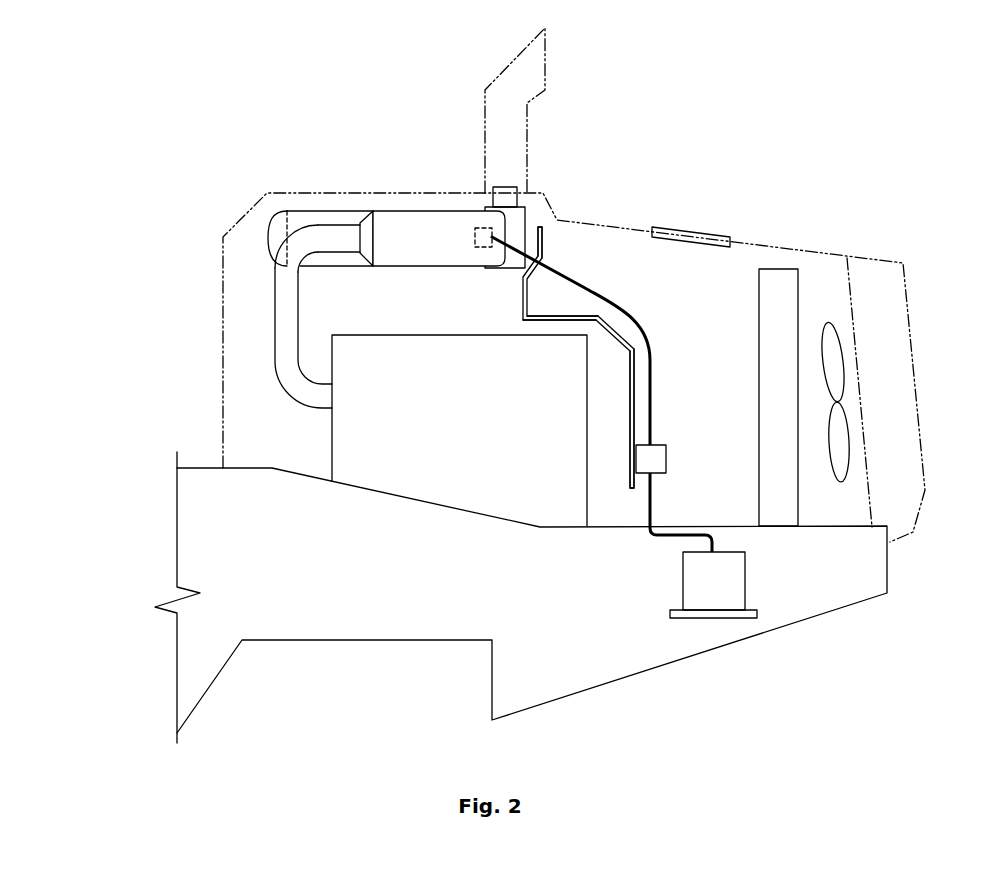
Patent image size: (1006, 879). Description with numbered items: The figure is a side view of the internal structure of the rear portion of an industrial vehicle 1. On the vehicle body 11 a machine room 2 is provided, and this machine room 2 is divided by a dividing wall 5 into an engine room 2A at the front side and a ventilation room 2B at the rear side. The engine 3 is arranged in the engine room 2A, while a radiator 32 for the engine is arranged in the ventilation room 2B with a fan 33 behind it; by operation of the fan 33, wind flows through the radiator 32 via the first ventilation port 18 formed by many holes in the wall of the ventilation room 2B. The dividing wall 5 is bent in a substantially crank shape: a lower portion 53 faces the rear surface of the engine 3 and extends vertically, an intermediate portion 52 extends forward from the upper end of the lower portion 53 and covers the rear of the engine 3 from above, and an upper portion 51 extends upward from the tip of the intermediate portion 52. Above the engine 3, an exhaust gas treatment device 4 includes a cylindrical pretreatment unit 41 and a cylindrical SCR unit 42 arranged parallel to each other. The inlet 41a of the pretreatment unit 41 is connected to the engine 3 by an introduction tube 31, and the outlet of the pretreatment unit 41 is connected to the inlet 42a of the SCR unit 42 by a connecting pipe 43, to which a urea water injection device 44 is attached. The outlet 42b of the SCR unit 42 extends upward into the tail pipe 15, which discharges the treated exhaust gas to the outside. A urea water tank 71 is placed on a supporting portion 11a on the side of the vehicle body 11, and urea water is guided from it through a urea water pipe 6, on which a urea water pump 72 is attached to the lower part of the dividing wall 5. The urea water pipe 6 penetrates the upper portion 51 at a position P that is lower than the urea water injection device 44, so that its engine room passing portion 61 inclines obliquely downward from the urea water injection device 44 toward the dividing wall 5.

The industrial vehicle 1 is at (912, 228).
The machine room 2 is at (642, 227).
The engine room 2A is at (250, 432).
The ventilation room 2B is at (733, 275).
The engine 3 is at (450, 465).
The exhaust gas treatment device 4 is at (385, 200).
The dividing wall 5 is at (628, 423).
The urea water pipe 6 is at (577, 288).
The vehicle body 11 is at (325, 617).
The supporting portion 11a is at (692, 618).
The tail pipe 15 is at (545, 67).
The first ventilation port 18 is at (683, 240).
The introduction tube 31 is at (283, 322).
The radiator 32 is at (778, 282).
The fan 33 is at (828, 327).
The pretreatment unit 41 is at (420, 230).
The inlet 41a is at (352, 233).
The SCR unit 42 is at (307, 218).
The inlet 42a is at (272, 214).
The outlet 42b is at (505, 187).
The connecting pipe 43 is at (278, 237).
The urea water injection device 44 is at (472, 235).
The upper portion 51 is at (520, 300).
The intermediate portion 52 is at (558, 318).
The lower portion 53 is at (630, 393).
The engine room passing portion 61 is at (528, 245).
The urea water tank 71 is at (712, 587).
The urea water pump 72 is at (657, 458).
The position P is at (537, 262).